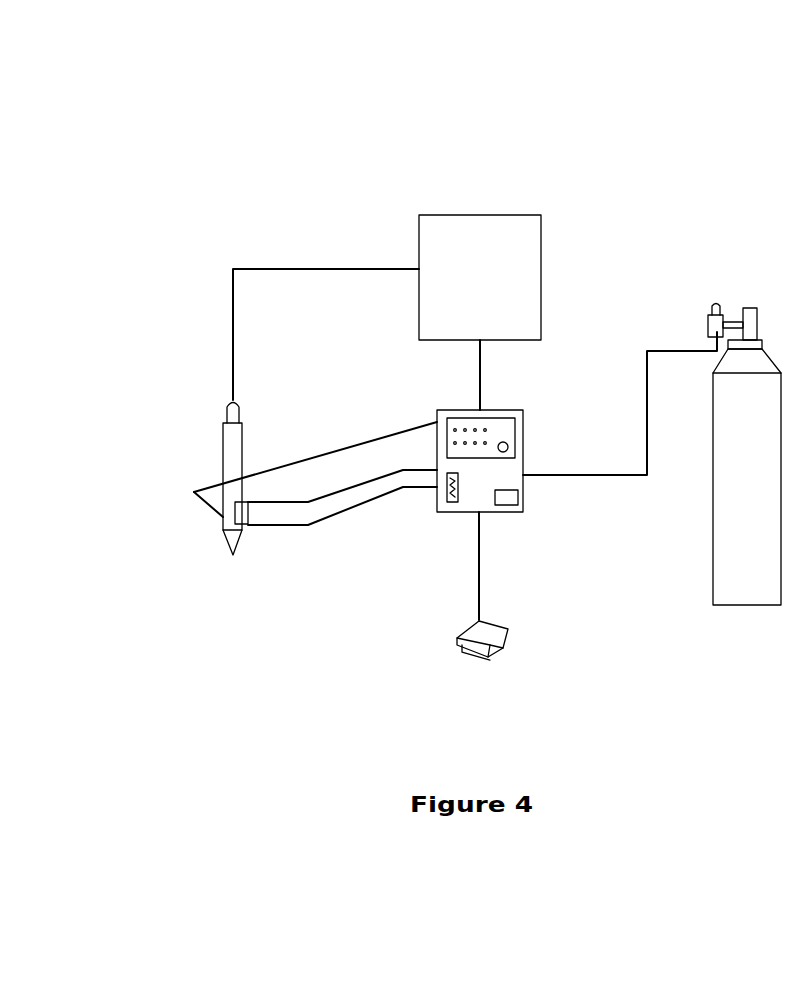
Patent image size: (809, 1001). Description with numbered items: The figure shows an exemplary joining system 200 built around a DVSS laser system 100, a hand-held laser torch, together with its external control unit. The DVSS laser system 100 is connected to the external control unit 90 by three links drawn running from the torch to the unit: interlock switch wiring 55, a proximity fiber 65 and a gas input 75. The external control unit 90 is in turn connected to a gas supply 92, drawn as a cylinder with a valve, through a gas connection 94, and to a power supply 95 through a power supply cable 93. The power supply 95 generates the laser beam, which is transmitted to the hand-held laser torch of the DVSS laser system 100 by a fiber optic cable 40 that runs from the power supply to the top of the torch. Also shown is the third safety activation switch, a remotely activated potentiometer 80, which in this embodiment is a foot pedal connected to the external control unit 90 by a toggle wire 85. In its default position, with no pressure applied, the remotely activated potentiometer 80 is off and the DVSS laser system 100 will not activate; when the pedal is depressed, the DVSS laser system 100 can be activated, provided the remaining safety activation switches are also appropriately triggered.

The joining system 200 is at (603, 72).
The power supply 95 is at (512, 247).
The fiber optic cable 40 is at (318, 267).
The power supply cable 93 is at (482, 377).
The gas connection 94 is at (663, 350).
The gas supply 92 is at (755, 548).
The external control unit 90 is at (460, 510).
The DVSS laser system 100 is at (225, 465).
The gas input 75 is at (207, 508).
The interlock switch wiring 55 is at (275, 522).
The proximity fiber 65 is at (323, 520).
The toggle wire 85 is at (483, 569).
The remotely activated potentiometer 80 is at (487, 663).